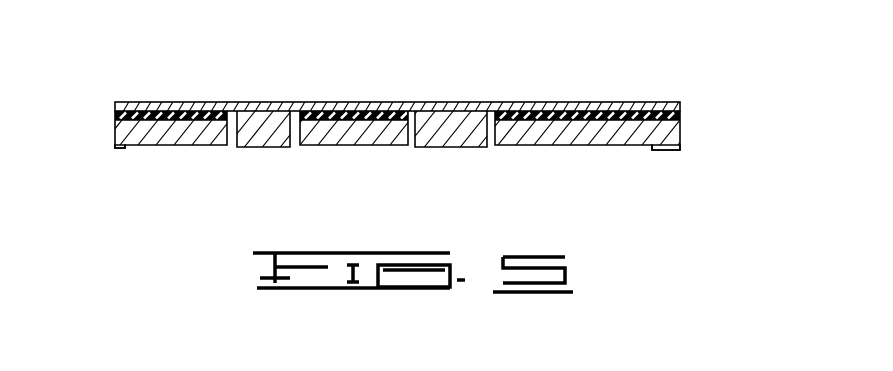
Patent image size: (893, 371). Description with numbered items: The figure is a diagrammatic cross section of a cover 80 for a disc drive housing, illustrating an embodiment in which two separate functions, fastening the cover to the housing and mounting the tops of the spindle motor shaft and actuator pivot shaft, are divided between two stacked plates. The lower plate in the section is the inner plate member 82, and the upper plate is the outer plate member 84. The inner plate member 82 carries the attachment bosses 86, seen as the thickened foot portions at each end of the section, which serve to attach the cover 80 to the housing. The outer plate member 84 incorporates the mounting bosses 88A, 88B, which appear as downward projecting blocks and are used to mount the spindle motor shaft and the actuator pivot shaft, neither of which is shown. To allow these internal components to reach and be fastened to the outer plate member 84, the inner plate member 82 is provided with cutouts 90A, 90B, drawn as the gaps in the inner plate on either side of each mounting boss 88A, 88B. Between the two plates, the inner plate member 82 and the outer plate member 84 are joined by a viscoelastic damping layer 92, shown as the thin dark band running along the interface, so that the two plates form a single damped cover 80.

The cover 80 is at (413, 129).
The inner plate member 82 is at (185, 148).
The outer plate member 84 is at (523, 102).
The attachment bosses 86 is at (129, 148).
The mounting boss 88A is at (440, 148).
The mounting boss 88B is at (283, 148).
The cutout 90A is at (493, 147).
The cutout 90B is at (303, 147).
The viscoelastic damping layer 92 is at (681, 111).